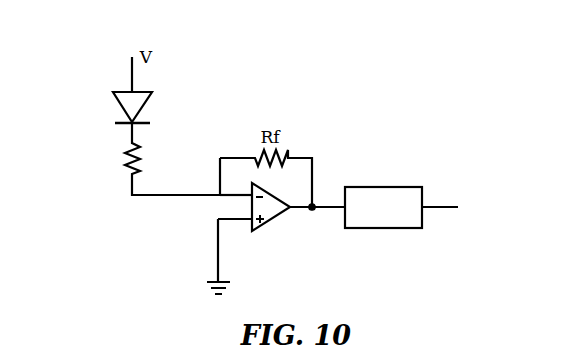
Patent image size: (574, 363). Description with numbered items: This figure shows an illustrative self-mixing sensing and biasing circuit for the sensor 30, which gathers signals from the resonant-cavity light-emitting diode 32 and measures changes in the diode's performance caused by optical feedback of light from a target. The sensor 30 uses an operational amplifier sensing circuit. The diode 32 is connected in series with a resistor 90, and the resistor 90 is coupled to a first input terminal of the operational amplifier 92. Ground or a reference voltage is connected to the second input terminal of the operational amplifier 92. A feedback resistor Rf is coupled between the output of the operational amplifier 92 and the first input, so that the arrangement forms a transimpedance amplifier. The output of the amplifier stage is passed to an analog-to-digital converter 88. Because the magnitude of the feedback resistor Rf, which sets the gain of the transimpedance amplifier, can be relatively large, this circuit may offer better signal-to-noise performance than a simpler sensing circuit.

The sensor 30 is at (335, 74).
The resonant-cavity light-emitting diode 32 is at (150, 102).
The analog-to-digital converter 88 is at (385, 187).
The resistor 90 is at (113, 167).
The operational amplifier 92 is at (270, 224).